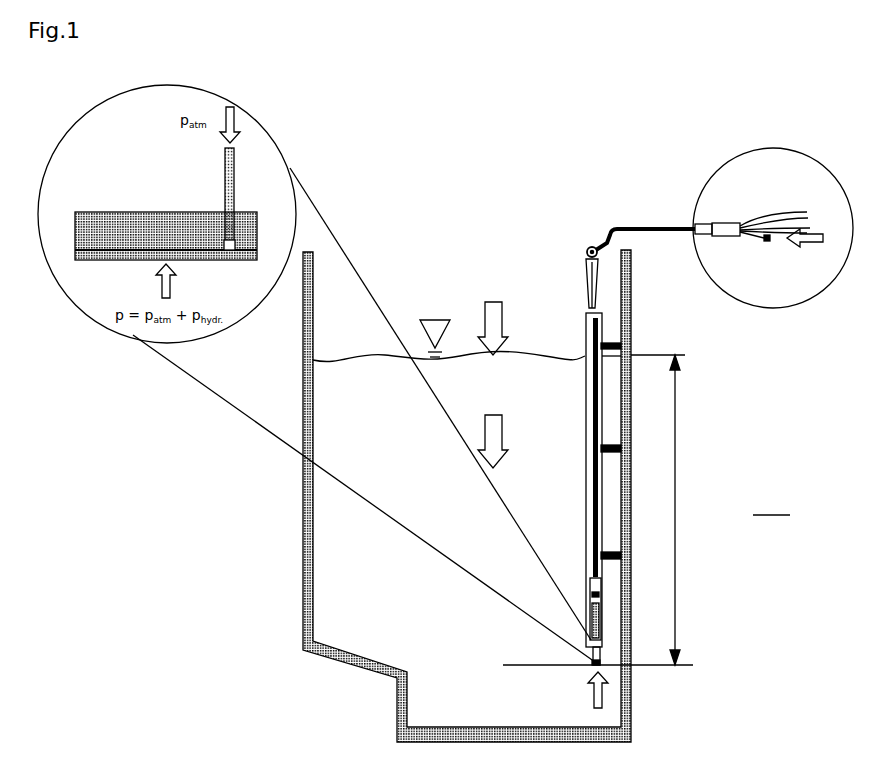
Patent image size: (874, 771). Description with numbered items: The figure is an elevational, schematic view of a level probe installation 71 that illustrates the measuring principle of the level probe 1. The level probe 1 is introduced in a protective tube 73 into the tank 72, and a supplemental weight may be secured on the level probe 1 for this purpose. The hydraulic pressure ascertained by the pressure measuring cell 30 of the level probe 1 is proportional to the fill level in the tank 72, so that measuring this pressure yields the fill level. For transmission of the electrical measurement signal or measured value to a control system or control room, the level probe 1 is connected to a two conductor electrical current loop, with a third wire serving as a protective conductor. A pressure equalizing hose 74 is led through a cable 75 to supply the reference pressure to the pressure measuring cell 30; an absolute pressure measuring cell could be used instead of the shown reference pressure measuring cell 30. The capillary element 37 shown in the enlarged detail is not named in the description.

The level probe 1 is at (605, 633).
The pressure measuring cell 30 is at (137, 233).
The pressure compensation capillary 37 is at (225, 195).
The level probe installation 71 is at (214, 600).
The tank 72 is at (347, 662).
The protective tube 73 is at (602, 437).
The pressure equalizing hose 74 is at (772, 241).
The cable 75 is at (622, 225).